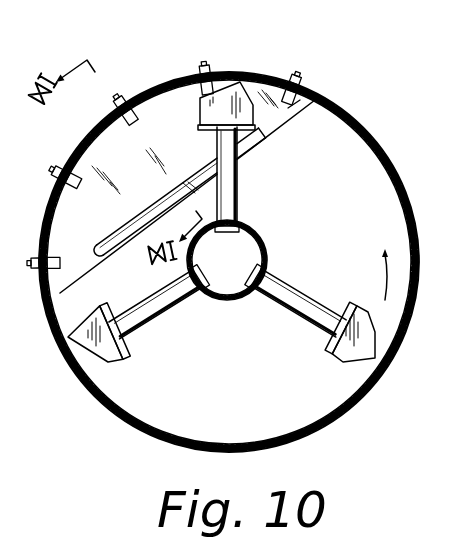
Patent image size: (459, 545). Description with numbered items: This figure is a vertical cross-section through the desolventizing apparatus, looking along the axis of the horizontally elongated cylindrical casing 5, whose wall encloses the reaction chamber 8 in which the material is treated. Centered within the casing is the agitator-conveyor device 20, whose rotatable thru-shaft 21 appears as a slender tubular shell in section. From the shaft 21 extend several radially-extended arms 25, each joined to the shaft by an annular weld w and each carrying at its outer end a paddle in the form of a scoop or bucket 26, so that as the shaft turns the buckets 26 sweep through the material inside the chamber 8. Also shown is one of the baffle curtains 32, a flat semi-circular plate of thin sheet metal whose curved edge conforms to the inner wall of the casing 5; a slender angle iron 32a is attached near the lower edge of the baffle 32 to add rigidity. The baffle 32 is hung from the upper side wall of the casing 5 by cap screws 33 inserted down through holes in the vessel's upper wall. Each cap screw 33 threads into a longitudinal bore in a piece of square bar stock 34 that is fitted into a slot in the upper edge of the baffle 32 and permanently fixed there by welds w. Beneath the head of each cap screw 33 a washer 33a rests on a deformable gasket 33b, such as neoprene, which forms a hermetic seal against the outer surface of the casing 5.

The cylindrical casing 5 is at (217, 443).
The reaction chamber 8 is at (362, 255).
The agitator-conveyor device 20 is at (270, 335).
The rotatable thru-shaft 21 is at (257, 238).
The radially-extended arms 25 is at (240, 178).
The bucket-like paddle 26 is at (201, 107).
The baffle curtain 32 is at (81, 268).
The angle iron 32a is at (132, 216).
The cap screw 33 is at (299, 70).
The washer 33a is at (211, 65).
The deformable gasket 33b is at (304, 95).
The square bar stock 34 is at (287, 108).
The weld w is at (238, 224).